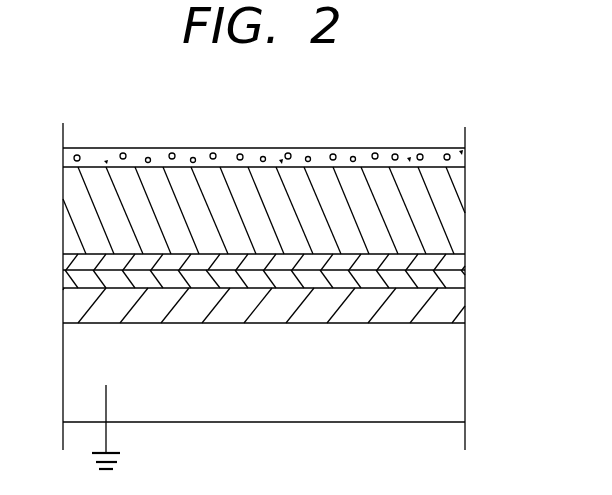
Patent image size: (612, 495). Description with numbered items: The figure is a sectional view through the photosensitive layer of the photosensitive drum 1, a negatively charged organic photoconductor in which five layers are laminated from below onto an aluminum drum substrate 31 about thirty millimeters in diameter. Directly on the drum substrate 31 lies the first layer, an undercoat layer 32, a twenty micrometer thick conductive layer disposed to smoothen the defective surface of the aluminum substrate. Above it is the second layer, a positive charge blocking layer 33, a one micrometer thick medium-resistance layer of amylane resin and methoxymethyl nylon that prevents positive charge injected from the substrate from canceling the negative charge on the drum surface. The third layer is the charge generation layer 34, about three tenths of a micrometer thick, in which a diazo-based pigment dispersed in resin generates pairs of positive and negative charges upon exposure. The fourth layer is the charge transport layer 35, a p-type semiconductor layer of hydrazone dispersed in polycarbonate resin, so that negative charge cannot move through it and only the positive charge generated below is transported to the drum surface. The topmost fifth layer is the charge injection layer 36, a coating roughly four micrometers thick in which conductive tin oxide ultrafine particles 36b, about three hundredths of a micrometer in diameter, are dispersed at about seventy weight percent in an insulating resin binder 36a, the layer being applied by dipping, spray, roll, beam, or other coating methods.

The photosensitive drum 1 is at (140, 126).
The drum substrate 31 is at (458, 355).
The undercoat layer 32 is at (458, 310).
The positive charge blocking layer 33 is at (458, 283).
The charge generation layer 34 is at (458, 265).
The charge transport layer 35 is at (460, 206).
The charge injection layer 36 is at (294, 123).
The insulating resin binder 36a is at (279, 151).
The SnO2 ultrafine particles 36b is at (334, 155).